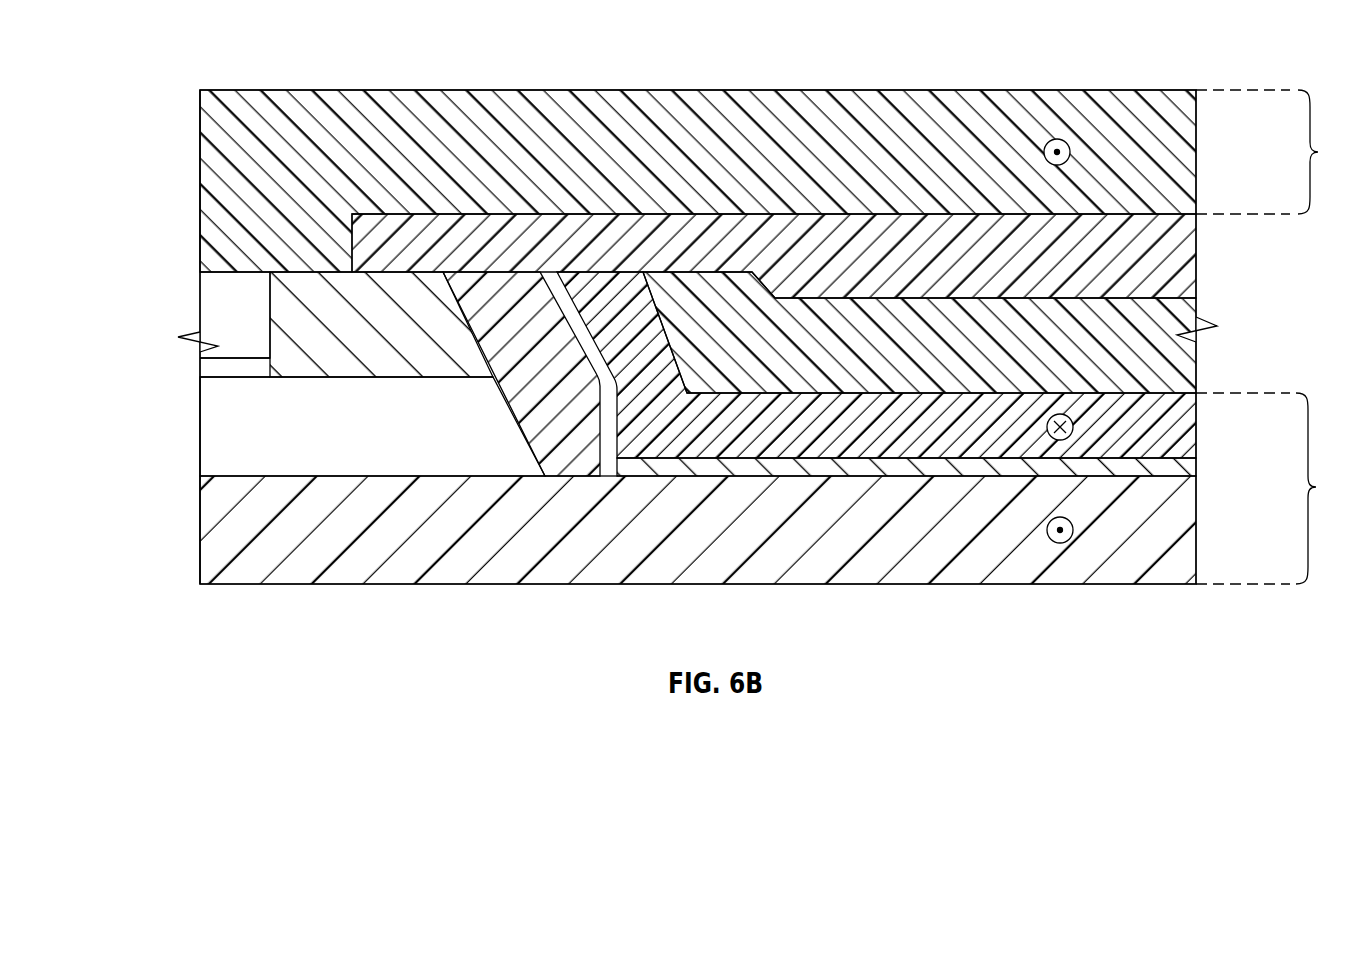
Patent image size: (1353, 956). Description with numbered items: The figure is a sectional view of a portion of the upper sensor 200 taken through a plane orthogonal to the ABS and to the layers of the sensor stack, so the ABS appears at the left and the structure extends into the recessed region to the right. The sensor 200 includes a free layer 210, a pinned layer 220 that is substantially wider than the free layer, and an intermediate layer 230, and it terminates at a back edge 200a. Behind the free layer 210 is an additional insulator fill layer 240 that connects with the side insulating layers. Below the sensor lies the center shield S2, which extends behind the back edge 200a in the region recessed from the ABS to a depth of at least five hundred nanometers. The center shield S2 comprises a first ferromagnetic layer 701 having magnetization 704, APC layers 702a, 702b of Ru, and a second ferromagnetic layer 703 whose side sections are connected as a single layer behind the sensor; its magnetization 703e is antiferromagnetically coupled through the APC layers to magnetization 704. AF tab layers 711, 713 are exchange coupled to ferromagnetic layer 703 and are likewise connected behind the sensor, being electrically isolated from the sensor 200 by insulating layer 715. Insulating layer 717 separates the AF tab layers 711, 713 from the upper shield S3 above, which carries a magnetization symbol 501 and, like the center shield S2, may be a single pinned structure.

The upper shield S3 501 is at (1057, 138).
The upper shield S3 is at (1271, 152).
The electrically insulating layer 715 is at (507, 303).
The insulating layer 717 is at (807, 258).
The free layer 210 is at (258, 297).
The sensor layer 230 is at (223, 373).
The insulator fill layer 240 is at (310, 298).
The pinned layer 220 is at (227, 453).
The back edge 200a is at (508, 402).
The upper sensor 200 is at (320, 376).
The second ferromagnetic layer 703 is at (909, 365).
The magnetization 703e is at (1047, 426).
The AF tab layer 711 is at (974, 332).
The AF tab layer 713 is at (1180, 350).
The APC layer 702a is at (951, 487).
The APC layer 702b is at (1182, 455).
The first ferromagnetic layer 701 is at (731, 552).
The magnetization 704 is at (1060, 543).
The center shield S2 is at (1272, 488).
The air bearing surface ABS is at (200, 567).